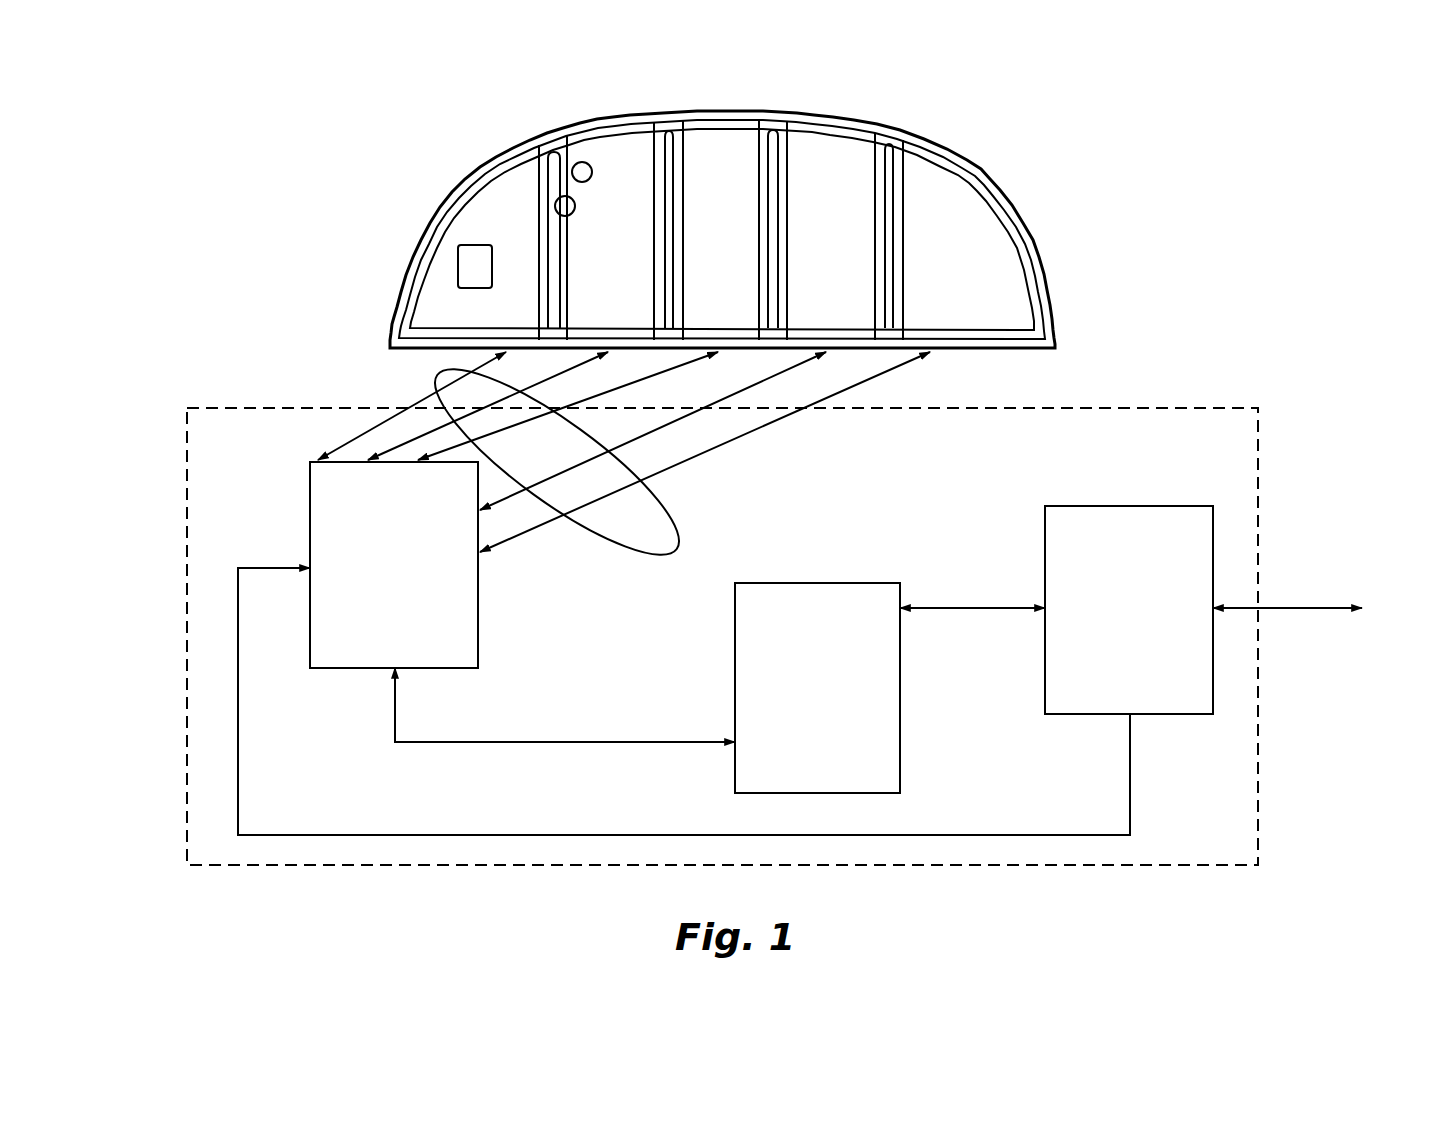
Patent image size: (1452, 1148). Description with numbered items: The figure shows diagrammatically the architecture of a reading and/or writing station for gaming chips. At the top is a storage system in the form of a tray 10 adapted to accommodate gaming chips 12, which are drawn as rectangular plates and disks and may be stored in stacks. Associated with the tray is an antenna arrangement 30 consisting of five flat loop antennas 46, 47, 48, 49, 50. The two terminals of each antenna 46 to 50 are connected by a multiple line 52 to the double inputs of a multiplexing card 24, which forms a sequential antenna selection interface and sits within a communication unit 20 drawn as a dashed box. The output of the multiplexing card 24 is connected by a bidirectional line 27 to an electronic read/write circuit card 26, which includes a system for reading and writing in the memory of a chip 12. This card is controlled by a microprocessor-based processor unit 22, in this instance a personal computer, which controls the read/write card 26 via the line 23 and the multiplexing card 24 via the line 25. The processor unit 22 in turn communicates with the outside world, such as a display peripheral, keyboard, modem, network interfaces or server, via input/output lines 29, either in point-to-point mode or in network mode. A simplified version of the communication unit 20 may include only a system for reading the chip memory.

The tray 10 is at (1003, 197).
The gaming chips 12 is at (464, 235).
The communication unit 20 is at (1262, 470).
The processor unit 22 is at (1130, 503).
The line 23 is at (972, 606).
The multiplexing card 24 is at (308, 530).
The line 25 is at (985, 833).
The electronic read/write circuit card 26 is at (790, 580).
The bidirectional line 27 is at (575, 740).
The input/output lines 29 is at (1292, 606).
The antenna arrangement 30 is at (645, 122).
The flat loop antenna 46 is at (537, 335).
The flat loop antenna 47 is at (645, 335).
The flat loop antenna 48 is at (755, 335).
The flat loop antenna 49 is at (865, 335).
The flat loop antenna 50 is at (960, 335).
The multiple line 52 is at (676, 503).